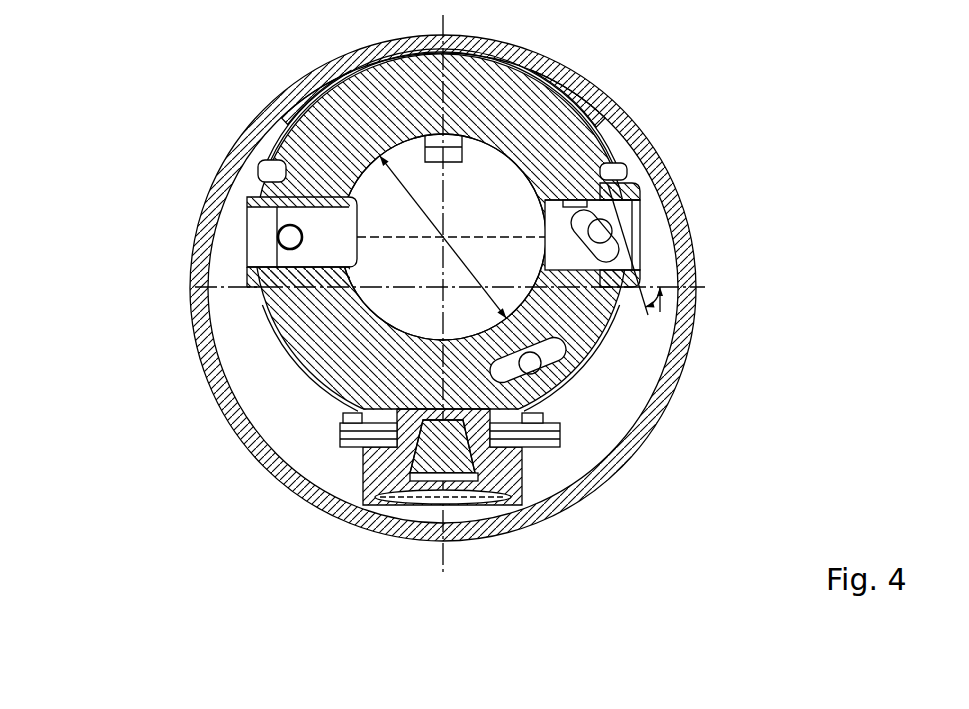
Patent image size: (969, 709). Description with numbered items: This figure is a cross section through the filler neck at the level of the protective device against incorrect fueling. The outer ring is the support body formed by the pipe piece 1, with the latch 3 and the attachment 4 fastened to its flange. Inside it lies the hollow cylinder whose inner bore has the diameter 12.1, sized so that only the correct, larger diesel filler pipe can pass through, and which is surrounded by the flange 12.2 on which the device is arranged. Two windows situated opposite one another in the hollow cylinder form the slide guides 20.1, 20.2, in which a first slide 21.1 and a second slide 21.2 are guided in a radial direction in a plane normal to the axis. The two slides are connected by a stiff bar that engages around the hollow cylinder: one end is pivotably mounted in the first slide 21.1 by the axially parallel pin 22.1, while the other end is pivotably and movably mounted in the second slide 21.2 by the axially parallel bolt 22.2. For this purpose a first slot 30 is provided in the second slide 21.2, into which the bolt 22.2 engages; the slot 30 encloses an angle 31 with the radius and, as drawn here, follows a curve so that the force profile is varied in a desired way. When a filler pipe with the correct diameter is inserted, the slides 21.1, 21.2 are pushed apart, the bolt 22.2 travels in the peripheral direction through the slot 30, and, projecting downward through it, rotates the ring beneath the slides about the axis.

The pipe piece 1 is at (446, 235).
The latch 3 is at (312, 368).
The attachment 4 is at (668, 372).
The diameter of the hollow cylinder 12.1 is at (473, 268).
The flange of the hollow cylinder 12.2 is at (339, 134).
The first slide guide 20.1 is at (262, 273).
The second slide guide 20.2 is at (632, 280).
The first slide 21.1 is at (290, 212).
The second slide 21.2 is at (600, 229).
The pin 22.1 is at (290, 237).
The bolt 22.2 is at (603, 233).
The first slot 30 is at (620, 212).
The angle 31 is at (662, 305).